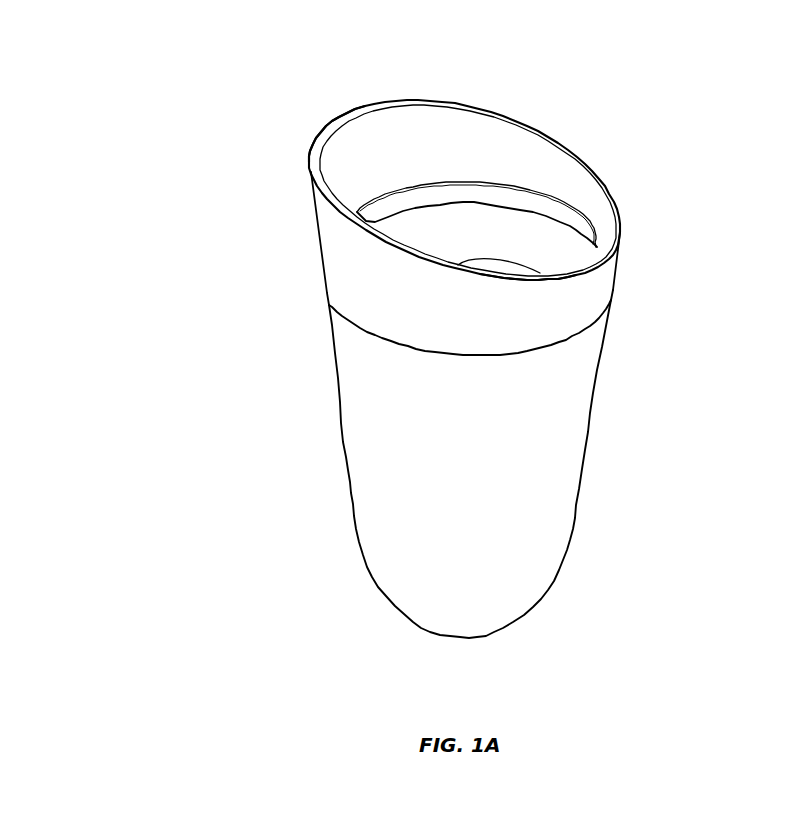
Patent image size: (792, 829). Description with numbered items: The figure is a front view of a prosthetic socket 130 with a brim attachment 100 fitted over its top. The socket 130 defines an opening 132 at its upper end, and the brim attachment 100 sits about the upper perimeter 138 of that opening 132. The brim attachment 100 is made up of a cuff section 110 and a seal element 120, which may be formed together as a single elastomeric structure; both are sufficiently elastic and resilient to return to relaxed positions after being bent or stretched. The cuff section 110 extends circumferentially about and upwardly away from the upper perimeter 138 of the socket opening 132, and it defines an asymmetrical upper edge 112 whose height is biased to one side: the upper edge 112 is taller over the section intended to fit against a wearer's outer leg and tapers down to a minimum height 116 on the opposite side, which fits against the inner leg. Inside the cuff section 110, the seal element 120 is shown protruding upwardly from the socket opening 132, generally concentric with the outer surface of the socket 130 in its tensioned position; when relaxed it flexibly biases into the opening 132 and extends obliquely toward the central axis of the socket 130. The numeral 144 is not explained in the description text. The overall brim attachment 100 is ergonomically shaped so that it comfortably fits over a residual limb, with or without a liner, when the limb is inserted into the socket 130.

The brim attachment 100 is at (264, 169).
The cuff section 110 is at (558, 140).
The upper edge 112 is at (443, 103).
The upper rim surface 144 is at (355, 108).
The minimum height 116 is at (585, 273).
The seal element 120 is at (592, 235).
The opening 132 is at (503, 237).
The upper perimeter 138 is at (577, 330).
The socket 130 is at (580, 389).